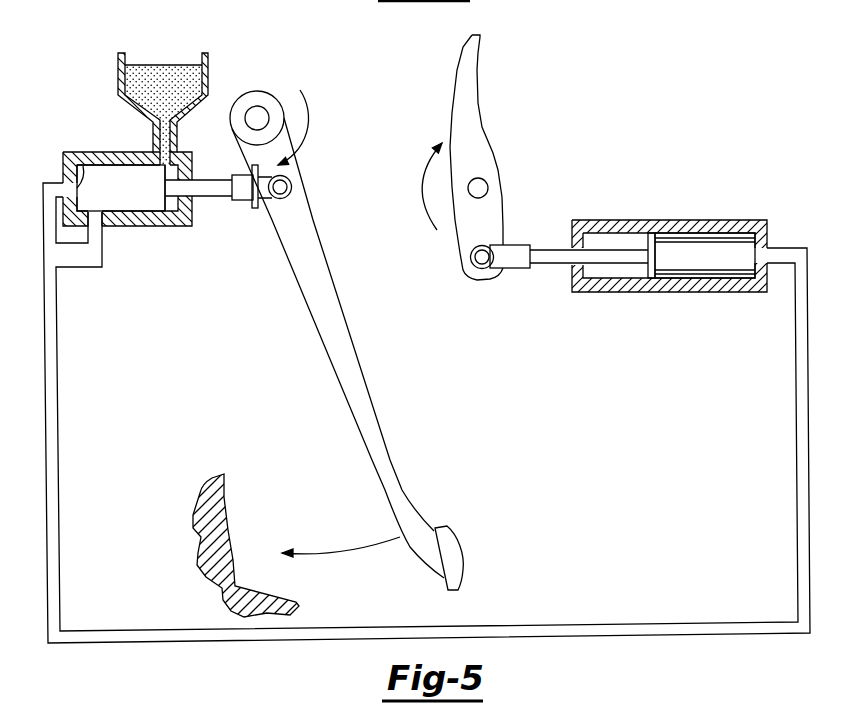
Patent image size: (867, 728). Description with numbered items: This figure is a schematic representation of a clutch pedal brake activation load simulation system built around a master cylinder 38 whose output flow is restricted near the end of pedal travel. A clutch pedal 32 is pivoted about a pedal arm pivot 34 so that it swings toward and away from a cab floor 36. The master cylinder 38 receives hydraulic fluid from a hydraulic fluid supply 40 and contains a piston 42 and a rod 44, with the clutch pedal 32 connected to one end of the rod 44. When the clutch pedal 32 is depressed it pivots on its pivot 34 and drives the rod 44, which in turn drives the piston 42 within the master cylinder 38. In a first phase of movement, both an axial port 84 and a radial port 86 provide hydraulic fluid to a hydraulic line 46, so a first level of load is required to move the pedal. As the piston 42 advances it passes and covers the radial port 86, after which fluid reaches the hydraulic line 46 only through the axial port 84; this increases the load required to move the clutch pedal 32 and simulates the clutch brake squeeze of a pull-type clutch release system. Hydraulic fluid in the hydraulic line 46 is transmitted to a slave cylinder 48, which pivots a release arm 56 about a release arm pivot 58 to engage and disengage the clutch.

The clutch pedal 32 is at (458, 563).
The pedal arm pivot 34 is at (260, 116).
The cab floor 36 is at (227, 528).
The master cylinder 38 is at (63, 173).
The hydraulic fluid supply 40 is at (140, 66).
The piston 42 is at (177, 170).
The rod 44 is at (210, 194).
The hydraulic line 46 is at (670, 628).
The slave cylinder 48 is at (693, 284).
The release arm 56 is at (472, 93).
The release arm pivot 58 is at (481, 188).
The axial port 84 is at (82, 170).
The radial port 86 is at (94, 222).